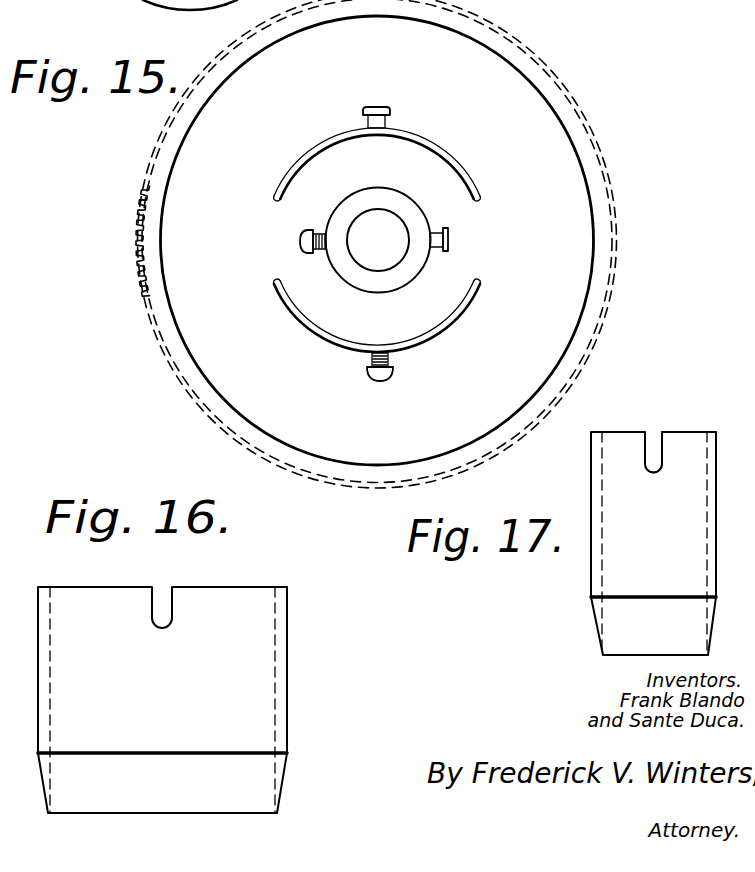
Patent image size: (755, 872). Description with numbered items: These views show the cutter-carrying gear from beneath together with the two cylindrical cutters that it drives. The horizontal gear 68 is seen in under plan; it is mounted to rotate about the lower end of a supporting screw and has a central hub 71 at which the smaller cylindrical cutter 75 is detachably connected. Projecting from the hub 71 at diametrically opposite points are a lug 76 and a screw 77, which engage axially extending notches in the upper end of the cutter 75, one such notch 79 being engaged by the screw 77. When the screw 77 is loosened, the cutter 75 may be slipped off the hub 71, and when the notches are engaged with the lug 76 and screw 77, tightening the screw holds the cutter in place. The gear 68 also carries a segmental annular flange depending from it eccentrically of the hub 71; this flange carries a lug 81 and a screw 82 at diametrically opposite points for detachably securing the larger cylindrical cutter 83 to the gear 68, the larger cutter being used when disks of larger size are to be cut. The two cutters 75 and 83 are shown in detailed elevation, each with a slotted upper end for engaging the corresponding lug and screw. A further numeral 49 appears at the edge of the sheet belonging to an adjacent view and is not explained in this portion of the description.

In FIG. 15, the pulley 49 is at (167, 8).
In FIG. 15, the horizontal gear 68 is at (138, 228).
In FIG. 15, the hub 71 is at (399, 202).
In FIG. 15, the lug 76 is at (448, 241).
In FIG. 15, the screw 77 is at (300, 247).
In FIG. 15, the lug 81 is at (388, 106).
In FIG. 15, the screw 82 is at (392, 375).
In FIG. 16, the larger cylindrical cutter 83 is at (162, 700).
In FIG. 17, the cylindrical cutter 75 is at (653, 543).
In FIG. 17, the notch 79 is at (649, 447).